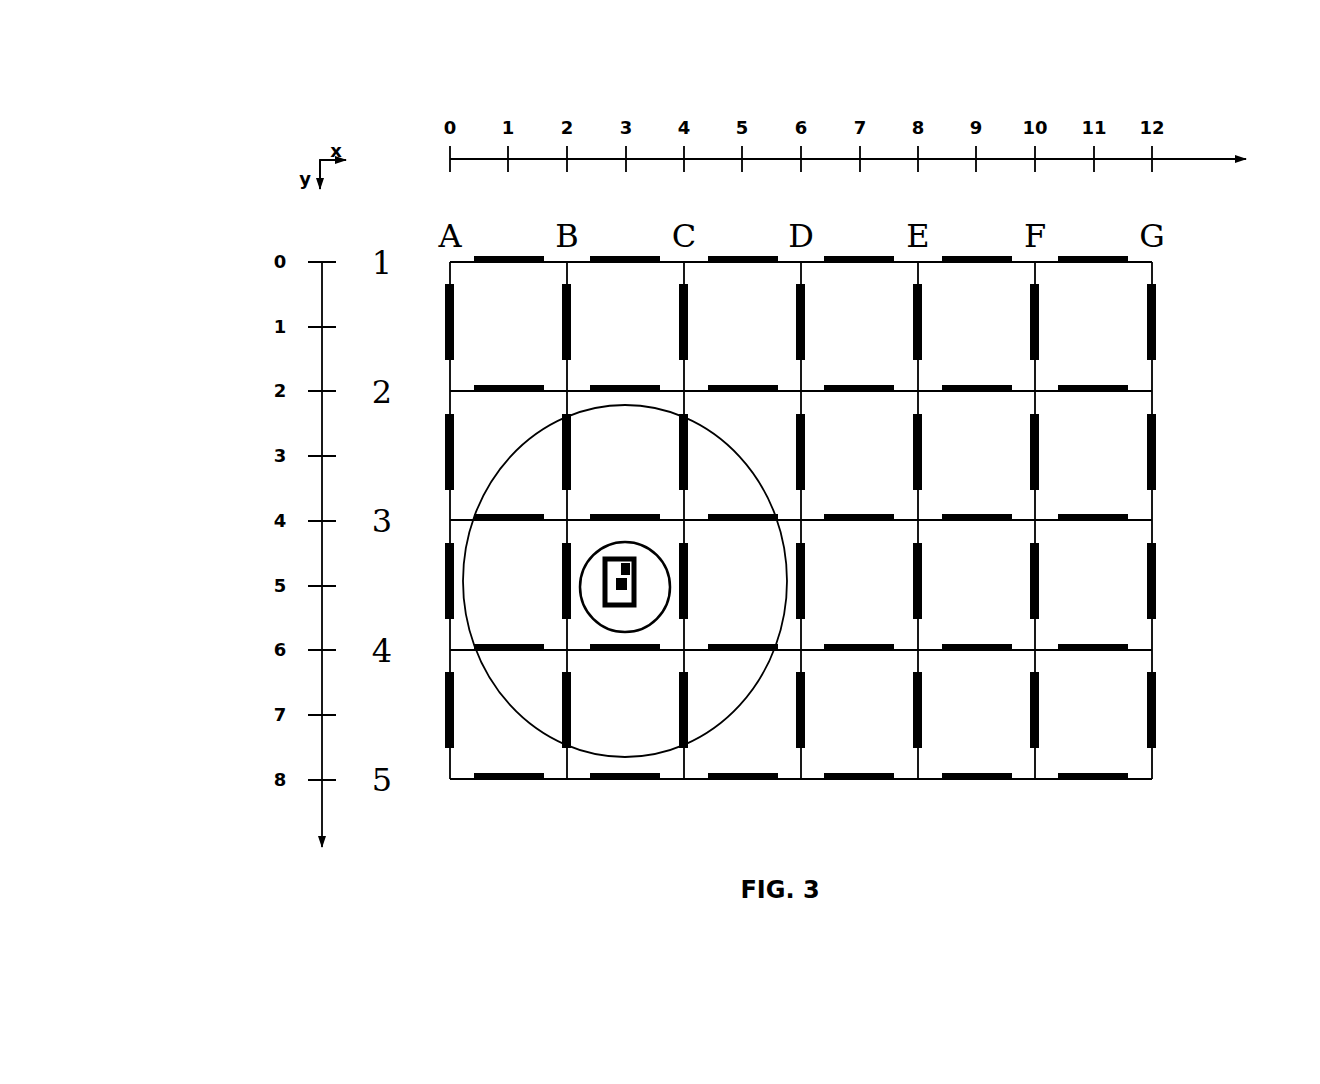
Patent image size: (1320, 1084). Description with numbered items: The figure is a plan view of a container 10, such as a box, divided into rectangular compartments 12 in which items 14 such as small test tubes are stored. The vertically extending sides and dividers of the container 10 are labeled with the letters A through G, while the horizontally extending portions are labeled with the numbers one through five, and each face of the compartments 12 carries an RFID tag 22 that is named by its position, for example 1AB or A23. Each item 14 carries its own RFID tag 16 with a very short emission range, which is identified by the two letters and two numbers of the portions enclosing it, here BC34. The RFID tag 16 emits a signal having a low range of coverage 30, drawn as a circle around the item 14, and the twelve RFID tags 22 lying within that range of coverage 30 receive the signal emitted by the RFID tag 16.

The container 10 is at (868, 583).
The compartments 12 is at (1098, 357).
The RFID tags 22 is at (1159, 598).
The range of coverage 30 is at (756, 472).
The item 14 is at (671, 582).
The RFID tag 16 is at (601, 573).